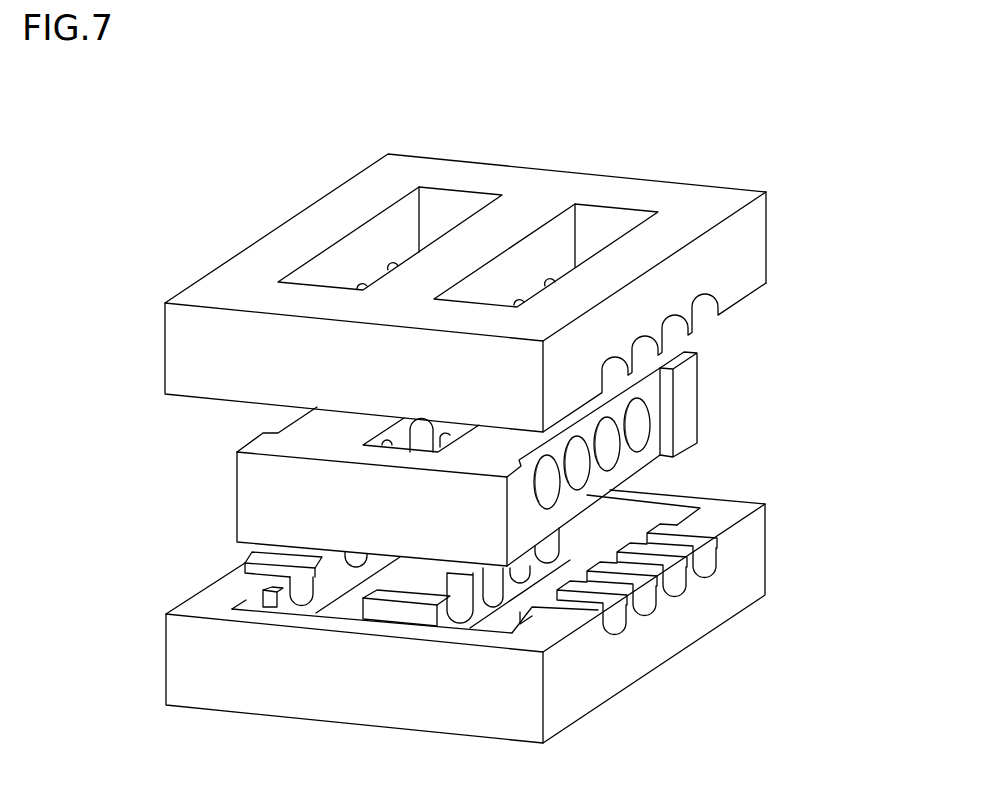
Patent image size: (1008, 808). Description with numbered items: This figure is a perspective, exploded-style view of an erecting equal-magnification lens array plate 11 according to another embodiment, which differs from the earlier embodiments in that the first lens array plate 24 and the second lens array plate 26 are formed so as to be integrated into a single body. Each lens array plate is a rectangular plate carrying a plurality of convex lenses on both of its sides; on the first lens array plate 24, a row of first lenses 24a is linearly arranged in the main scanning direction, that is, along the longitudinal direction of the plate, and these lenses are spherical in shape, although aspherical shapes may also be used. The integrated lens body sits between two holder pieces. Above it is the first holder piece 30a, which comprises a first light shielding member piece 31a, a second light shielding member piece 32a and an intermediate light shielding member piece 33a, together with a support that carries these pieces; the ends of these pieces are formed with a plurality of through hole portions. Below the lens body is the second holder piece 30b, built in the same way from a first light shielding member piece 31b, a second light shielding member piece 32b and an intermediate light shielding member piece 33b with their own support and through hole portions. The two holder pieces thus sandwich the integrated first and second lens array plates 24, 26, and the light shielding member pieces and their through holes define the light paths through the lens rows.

The erecting equal-magnification lens array plate 11 is at (272, 176).
The first holder piece 30a is at (640, 162).
The first light shielding member piece 31a is at (660, 235).
The second light shielding member piece 32a is at (370, 195).
The intermediate light shielding member piece 33a is at (540, 195).
The second lens array plate 26 is at (318, 440).
The first lens array plate 24 is at (498, 458).
The first lenses 24a is at (638, 428).
The second holder piece 30b is at (778, 597).
The first light shielding member piece 31b is at (553, 622).
The second light shielding member piece 32b is at (243, 585).
The intermediate light shielding member piece 33b is at (390, 592).